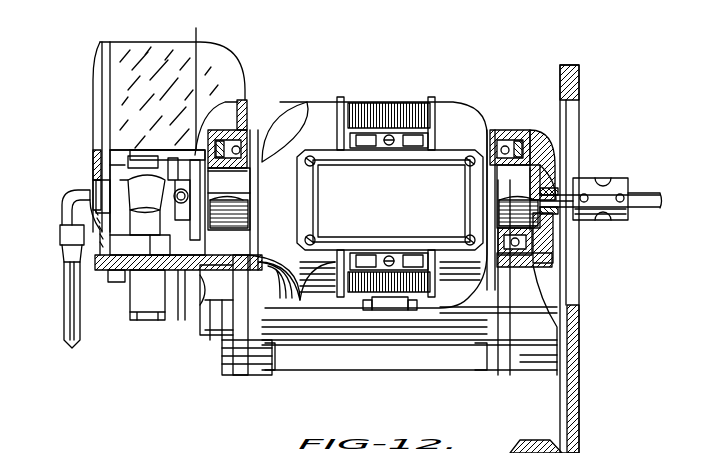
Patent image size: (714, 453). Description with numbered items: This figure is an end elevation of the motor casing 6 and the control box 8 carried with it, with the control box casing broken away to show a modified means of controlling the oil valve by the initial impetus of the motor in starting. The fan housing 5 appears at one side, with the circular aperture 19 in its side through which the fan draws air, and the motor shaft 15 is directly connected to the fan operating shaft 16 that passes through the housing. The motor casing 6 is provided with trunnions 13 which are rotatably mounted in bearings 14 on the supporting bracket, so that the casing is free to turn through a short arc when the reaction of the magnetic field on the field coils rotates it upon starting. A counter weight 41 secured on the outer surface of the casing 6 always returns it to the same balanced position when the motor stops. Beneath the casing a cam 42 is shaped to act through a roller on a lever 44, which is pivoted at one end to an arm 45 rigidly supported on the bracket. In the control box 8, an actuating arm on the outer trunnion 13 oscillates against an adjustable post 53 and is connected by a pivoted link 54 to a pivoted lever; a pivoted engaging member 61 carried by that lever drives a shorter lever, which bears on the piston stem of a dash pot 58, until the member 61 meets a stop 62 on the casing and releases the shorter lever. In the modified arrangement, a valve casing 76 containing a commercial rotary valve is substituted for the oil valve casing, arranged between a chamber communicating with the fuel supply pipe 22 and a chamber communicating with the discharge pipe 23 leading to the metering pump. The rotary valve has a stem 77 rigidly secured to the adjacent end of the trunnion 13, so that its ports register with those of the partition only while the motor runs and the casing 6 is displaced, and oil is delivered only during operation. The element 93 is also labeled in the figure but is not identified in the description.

The fan housing 5 is at (578, 78).
The motor casing 6 is at (448, 115).
The control box 8 is at (214, 57).
The trunnions 13 is at (382, 210).
The bearings 14 is at (243, 130).
The motor shaft 15 is at (562, 197).
The fan operating shaft 16 is at (648, 188).
The circular aperture 19 is at (574, 122).
The oil supply pipe 22 is at (66, 292).
The discharge pipe 23 is at (175, 205).
The counter weight 41 is at (390, 200).
The cam 42 is at (388, 297).
The lever 44 is at (396, 310).
The arm 45 is at (370, 310).
The post 53 is at (247, 192).
The pivoted link 54 is at (145, 158).
The dash pot 58 is at (135, 297).
The pivoted engaging member 61 is at (150, 150).
The stop 62 is at (242, 170).
The valve casing 76 is at (150, 182).
The stem 77 is at (197, 80).
The base block 93 is at (565, 446).